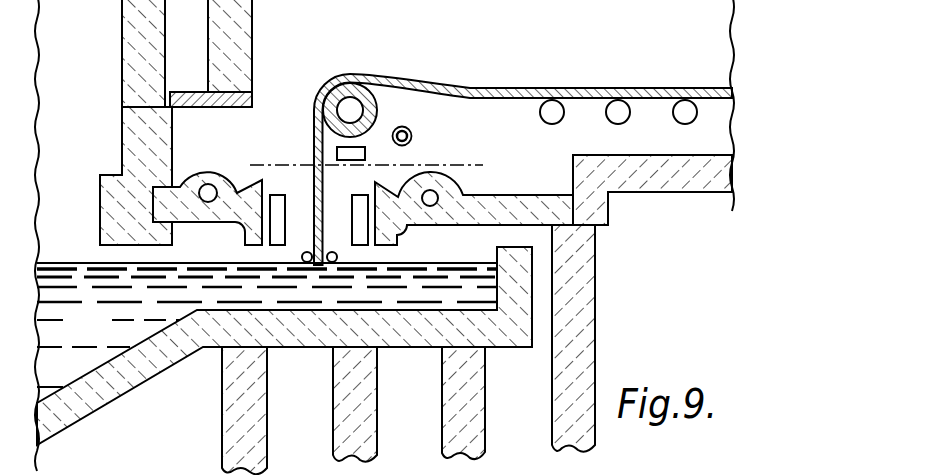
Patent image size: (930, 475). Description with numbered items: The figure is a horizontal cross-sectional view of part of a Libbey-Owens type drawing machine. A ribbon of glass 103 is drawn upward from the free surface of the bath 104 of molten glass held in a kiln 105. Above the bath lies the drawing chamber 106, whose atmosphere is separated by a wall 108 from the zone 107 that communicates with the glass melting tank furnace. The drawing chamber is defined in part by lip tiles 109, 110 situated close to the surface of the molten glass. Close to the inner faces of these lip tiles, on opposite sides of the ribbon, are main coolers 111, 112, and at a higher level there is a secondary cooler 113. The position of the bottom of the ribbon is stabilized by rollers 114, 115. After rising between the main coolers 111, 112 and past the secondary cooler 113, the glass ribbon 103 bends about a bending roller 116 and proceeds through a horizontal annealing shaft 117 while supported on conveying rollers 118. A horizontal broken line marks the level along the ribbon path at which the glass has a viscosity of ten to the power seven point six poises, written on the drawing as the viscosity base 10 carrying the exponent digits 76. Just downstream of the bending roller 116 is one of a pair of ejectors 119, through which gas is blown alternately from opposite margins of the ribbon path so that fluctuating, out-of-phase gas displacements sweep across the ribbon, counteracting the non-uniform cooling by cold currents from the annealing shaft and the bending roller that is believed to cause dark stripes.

The center line 10 is at (368, 157).
The reference axis 76 is at (504, 146).
The ribbon of glass 103 is at (316, 139).
The bath of molten glass 104 is at (112, 332).
The kiln 105 is at (301, 355).
The drawing chamber 106 is at (332, 54).
The zone 107 is at (97, 109).
The wall 108 is at (146, 138).
The lip tile 109 is at (195, 186).
The lip tile 110 is at (469, 203).
The main cooler 111 is at (275, 208).
The main cooler 112 is at (363, 202).
The secondary cooler 113 is at (321, 127).
The roller 114 is at (302, 257).
The roller 115 is at (337, 258).
The bending roller 116 is at (378, 107).
The horizontal annealing shaft 117 is at (617, 55).
The conveying rollers 118 is at (677, 114).
The ejector 119 is at (408, 134).